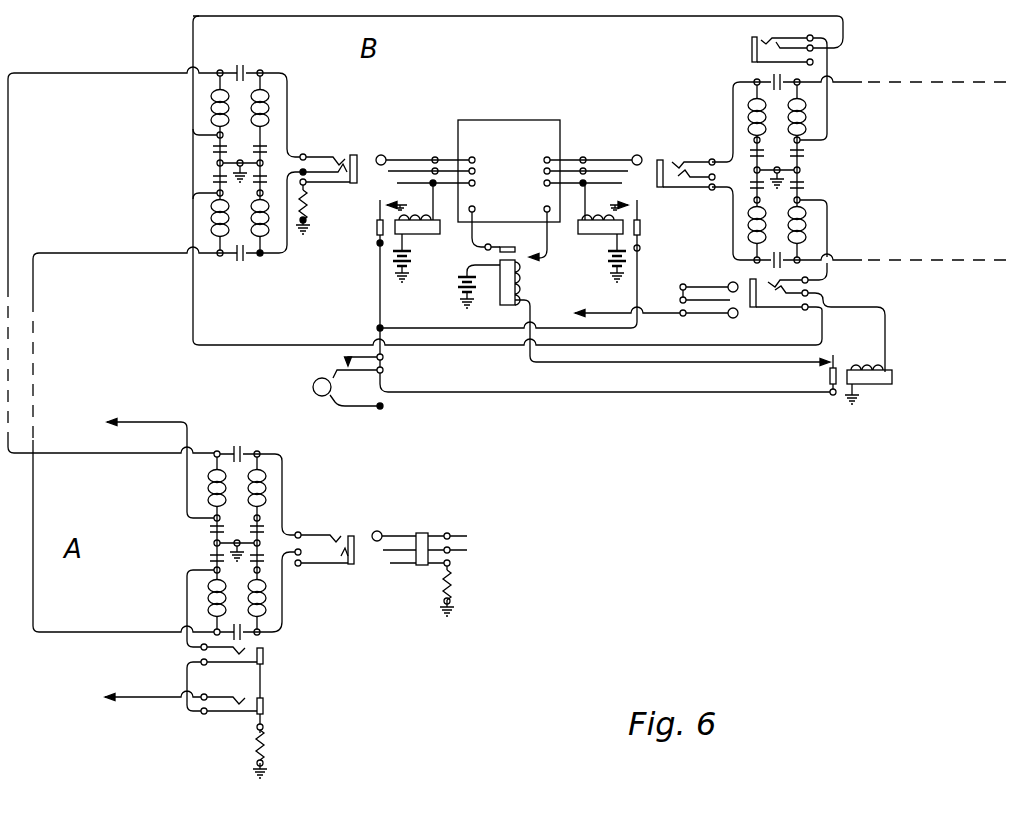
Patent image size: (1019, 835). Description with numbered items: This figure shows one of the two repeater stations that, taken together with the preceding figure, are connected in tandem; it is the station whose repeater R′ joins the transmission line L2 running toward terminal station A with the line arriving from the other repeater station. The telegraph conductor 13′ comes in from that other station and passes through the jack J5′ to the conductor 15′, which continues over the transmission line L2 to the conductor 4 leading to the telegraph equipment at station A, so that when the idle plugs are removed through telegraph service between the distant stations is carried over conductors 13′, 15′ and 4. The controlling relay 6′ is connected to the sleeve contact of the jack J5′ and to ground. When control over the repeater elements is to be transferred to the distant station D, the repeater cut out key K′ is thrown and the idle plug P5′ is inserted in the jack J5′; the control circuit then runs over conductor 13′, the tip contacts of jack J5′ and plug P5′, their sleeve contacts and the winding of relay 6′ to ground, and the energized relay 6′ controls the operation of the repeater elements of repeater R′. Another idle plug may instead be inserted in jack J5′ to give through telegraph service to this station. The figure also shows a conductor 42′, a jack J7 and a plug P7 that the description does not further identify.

The transmission line L2 is at (7, 385).
The conductor 15′ is at (192, 301).
The repeater / relay set R′ is at (509, 171).
The conductor 42′ is at (622, 302).
The idle plug P5′ is at (709, 280).
The jack J5′ is at (779, 317).
The conductor 13′ is at (822, 256).
The relay 6′ is at (863, 388).
The repeater cut out key K′ is at (330, 383).
The conductor 4 is at (186, 612).
The jack J7 is at (324, 534).
The plug P7 is at (419, 559).